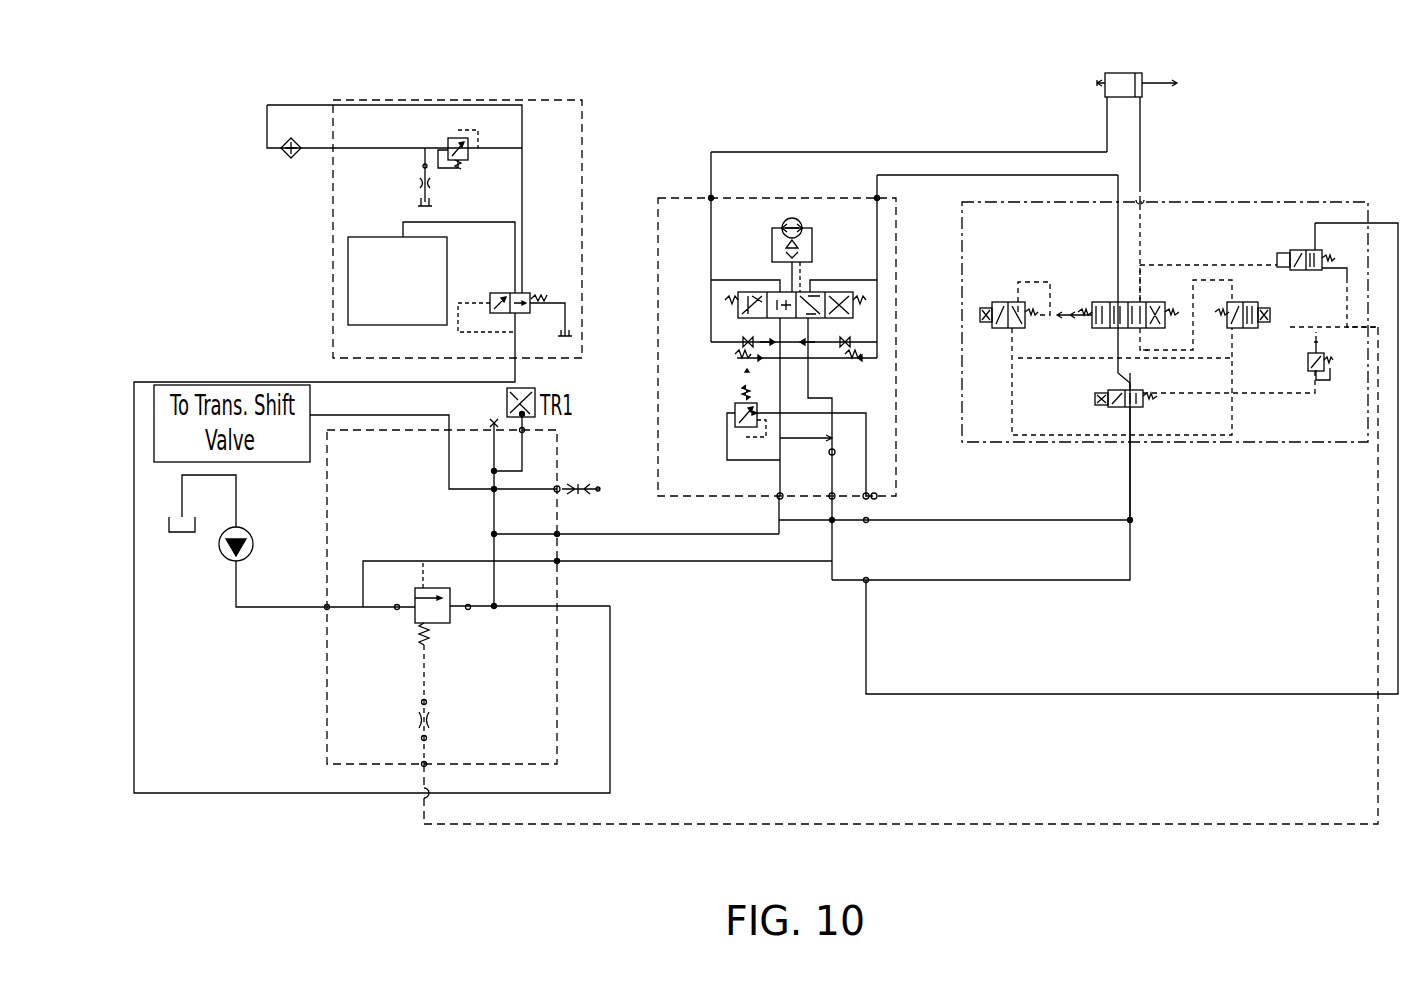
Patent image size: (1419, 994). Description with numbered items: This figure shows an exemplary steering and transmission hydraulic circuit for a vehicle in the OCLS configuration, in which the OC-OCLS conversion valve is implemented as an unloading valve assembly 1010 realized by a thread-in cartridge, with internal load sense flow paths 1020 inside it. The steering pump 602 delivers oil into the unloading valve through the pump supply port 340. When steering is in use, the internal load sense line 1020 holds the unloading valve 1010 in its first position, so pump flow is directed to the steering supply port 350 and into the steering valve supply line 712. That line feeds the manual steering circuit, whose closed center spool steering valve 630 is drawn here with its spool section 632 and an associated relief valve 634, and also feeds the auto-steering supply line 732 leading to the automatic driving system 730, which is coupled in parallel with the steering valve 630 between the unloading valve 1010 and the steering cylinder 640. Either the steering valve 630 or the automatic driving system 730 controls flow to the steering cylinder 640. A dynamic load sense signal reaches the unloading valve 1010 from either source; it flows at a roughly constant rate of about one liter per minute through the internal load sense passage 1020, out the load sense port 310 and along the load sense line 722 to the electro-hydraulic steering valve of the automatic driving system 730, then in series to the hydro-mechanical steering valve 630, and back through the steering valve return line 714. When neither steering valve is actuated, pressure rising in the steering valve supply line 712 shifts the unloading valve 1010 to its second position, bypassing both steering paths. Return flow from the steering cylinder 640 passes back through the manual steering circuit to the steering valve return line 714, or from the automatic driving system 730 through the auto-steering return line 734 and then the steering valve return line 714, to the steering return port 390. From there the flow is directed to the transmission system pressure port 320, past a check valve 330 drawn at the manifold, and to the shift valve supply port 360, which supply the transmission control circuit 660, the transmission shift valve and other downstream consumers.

The transmission control circuit 660 is at (545, 132).
The steering pump 602 is at (252, 542).
The pump supply port 340 is at (326, 610).
The unloading valve assembly 1010 is at (413, 612).
The internal load sense flow paths 1020 is at (403, 575).
The load sense port 310 is at (430, 763).
The transmission system pressure port 320 is at (555, 607).
The shift valve supply port 360 is at (449, 430).
The check valve 330 is at (565, 488).
The steering return port 390 is at (560, 534).
The steering supply port 350 is at (562, 563).
The steering valve return line 714 is at (667, 536).
The steering valve supply line 712 is at (760, 563).
The auto-steering return line 734 is at (982, 518).
The auto-steering supply line 732 is at (988, 582).
The load sense line 722 is at (895, 822).
The steering valve 630 is at (722, 312).
The directional control valve 632 is at (822, 316).
The pressure relief valve 634 is at (768, 318).
The steering cylinder 640 is at (1122, 73).
The automatic driving system 730 is at (1218, 212).